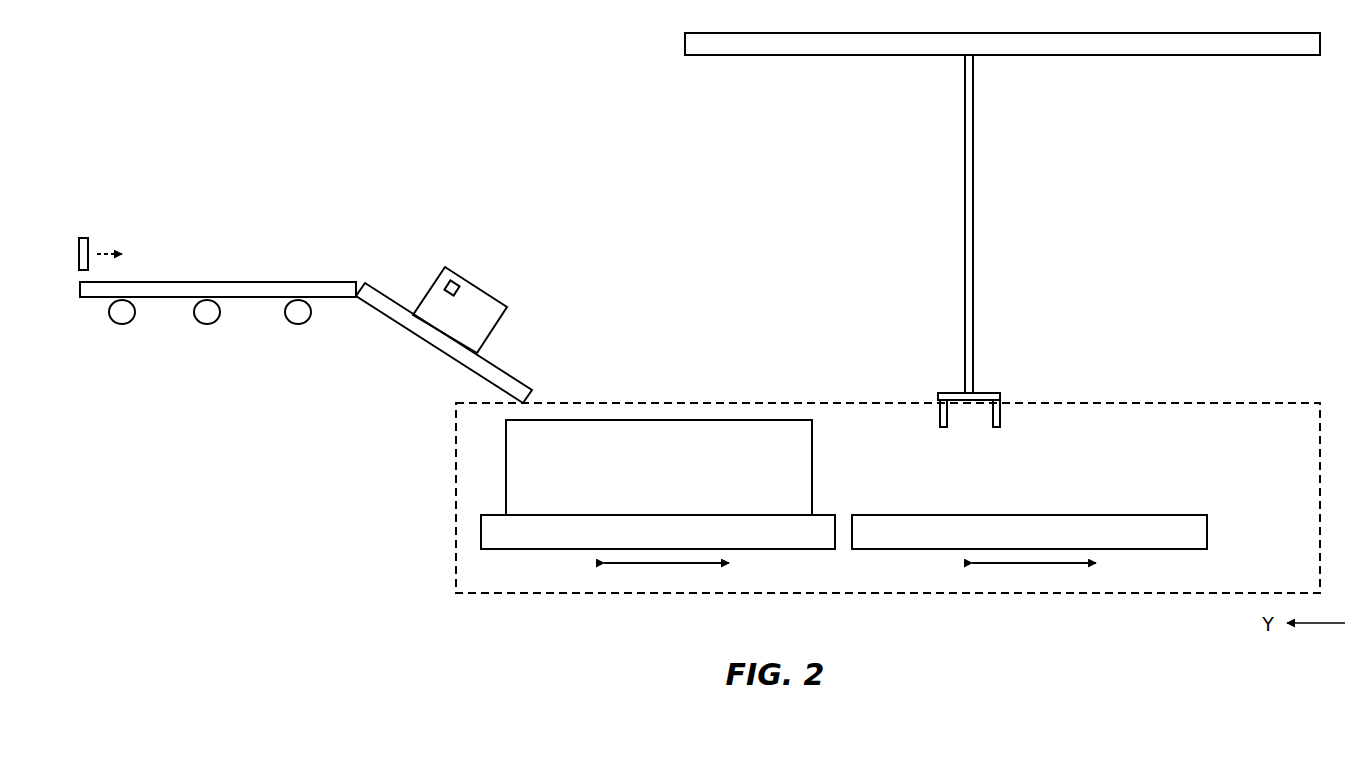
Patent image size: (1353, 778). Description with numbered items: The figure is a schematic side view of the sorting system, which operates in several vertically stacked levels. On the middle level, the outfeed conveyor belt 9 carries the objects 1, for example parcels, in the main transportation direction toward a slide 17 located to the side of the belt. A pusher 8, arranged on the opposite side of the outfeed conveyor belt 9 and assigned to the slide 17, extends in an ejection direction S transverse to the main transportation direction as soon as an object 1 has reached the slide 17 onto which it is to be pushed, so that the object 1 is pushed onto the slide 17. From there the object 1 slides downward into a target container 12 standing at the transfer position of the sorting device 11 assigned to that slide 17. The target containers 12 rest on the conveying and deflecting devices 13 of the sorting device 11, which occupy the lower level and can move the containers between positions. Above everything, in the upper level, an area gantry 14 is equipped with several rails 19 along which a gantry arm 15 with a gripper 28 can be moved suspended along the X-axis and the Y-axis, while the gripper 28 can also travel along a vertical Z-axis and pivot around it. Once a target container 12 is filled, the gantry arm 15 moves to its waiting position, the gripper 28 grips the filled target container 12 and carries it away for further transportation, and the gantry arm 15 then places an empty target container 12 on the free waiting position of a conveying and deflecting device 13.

The object 1 is at (463, 277).
The pusher 8 is at (83, 238).
The ejection direction S is at (109, 248).
The outfeed conveyor belt 9 is at (195, 218).
The slide 17 is at (397, 260).
The area gantry 14 is at (945, 230).
The rail 19 is at (1237, 43).
The gantry arm 15 is at (970, 227).
The gripper 28 is at (1000, 395).
The sorting device 11 is at (846, 470).
The target container 12 is at (717, 420).
The conveying and deflecting device 13 is at (478, 532).